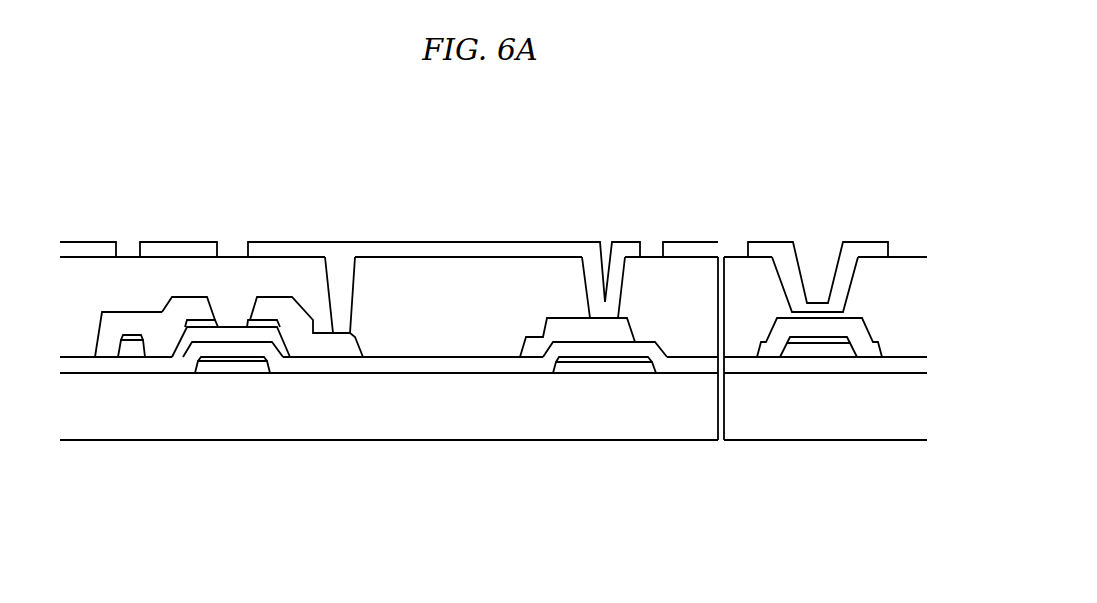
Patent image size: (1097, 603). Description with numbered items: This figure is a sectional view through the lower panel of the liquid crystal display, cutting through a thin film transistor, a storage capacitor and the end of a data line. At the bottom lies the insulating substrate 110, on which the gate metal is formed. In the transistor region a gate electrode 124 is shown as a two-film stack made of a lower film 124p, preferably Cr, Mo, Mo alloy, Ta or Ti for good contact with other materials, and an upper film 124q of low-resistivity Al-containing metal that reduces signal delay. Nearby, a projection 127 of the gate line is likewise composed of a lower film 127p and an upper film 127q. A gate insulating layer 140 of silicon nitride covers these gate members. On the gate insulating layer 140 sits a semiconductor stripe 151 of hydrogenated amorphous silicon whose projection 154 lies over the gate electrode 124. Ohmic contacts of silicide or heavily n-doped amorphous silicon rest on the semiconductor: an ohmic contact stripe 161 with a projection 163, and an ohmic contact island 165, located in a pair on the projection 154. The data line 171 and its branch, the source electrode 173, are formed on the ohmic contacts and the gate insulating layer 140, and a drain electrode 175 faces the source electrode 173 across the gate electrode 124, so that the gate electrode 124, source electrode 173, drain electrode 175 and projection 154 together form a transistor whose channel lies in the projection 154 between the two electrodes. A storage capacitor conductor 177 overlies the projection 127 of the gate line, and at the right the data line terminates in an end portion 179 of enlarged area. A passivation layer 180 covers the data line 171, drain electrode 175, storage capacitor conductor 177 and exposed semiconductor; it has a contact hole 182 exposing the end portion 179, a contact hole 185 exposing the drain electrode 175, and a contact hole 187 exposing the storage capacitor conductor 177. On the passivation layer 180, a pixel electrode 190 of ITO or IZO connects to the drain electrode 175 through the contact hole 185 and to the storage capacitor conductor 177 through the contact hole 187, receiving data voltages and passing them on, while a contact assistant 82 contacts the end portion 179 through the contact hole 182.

The insulating substrate 110 is at (480, 418).
The gate electrode 124 is at (237, 441).
The lower film of gate electrode 124p is at (207, 368).
The upper film of gate electrode 124q is at (257, 362).
The projection of gate line 127 is at (589, 439).
The lower film of projection 127p is at (567, 370).
The upper film of projection 127q is at (590, 362).
The gate insulating layer 140 is at (382, 364).
The semiconductor stripe 151 is at (133, 346).
The projection of semiconductor stripe 154 is at (178, 344).
The ohmic contact stripe 161 is at (132, 333).
The projection of ohmic contact stripe 163 is at (206, 320).
The ohmic contact island 165 is at (259, 320).
The data line 171 is at (103, 348).
The source electrode 173 is at (171, 320).
The drain electrode 175 is at (317, 348).
The storage capacitor conductor 177 is at (555, 326).
The end portion of data line 179 is at (866, 350).
The passivation layer 180 is at (440, 346).
The contact hole 182 is at (817, 255).
The contact hole 185 is at (340, 266).
The contact hole 187 is at (601, 256).
The pixel electrode 190 is at (447, 248).
The contact assistant 82 is at (760, 248).